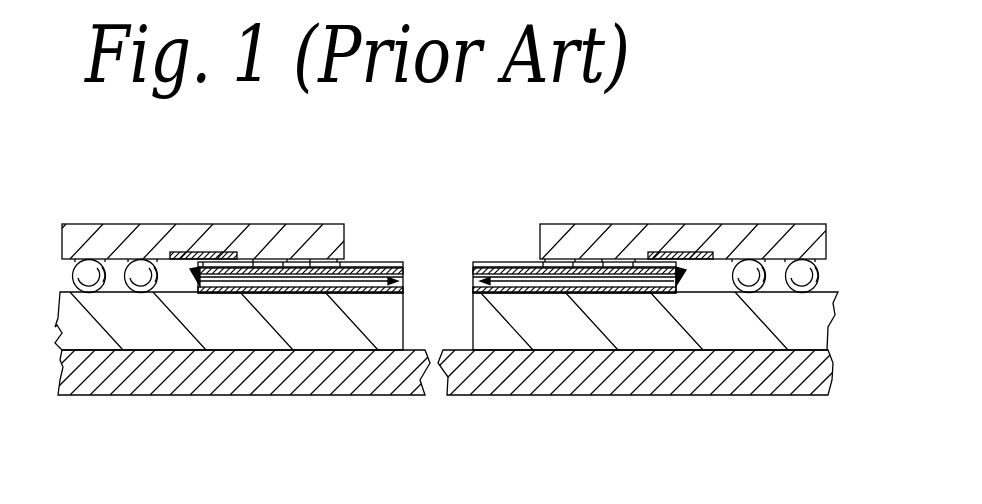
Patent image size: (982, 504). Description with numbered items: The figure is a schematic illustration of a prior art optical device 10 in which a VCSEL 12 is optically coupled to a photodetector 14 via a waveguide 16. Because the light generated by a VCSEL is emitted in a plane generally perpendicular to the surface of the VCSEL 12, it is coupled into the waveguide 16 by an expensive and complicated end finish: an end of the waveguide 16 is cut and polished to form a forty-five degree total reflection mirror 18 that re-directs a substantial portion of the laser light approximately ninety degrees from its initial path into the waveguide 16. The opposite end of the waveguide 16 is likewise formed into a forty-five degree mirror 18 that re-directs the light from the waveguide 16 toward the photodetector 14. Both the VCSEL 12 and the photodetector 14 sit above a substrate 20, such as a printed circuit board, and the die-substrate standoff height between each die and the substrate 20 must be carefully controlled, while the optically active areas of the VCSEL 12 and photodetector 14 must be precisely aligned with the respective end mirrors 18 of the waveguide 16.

The optical device 10 is at (798, 152).
The VCSEL 12 is at (117, 223).
The photodetector 14 is at (770, 224).
The waveguide 16 is at (503, 250).
The 45 degree total reflection mirror 18 is at (187, 288).
The substrate 20 is at (67, 331).